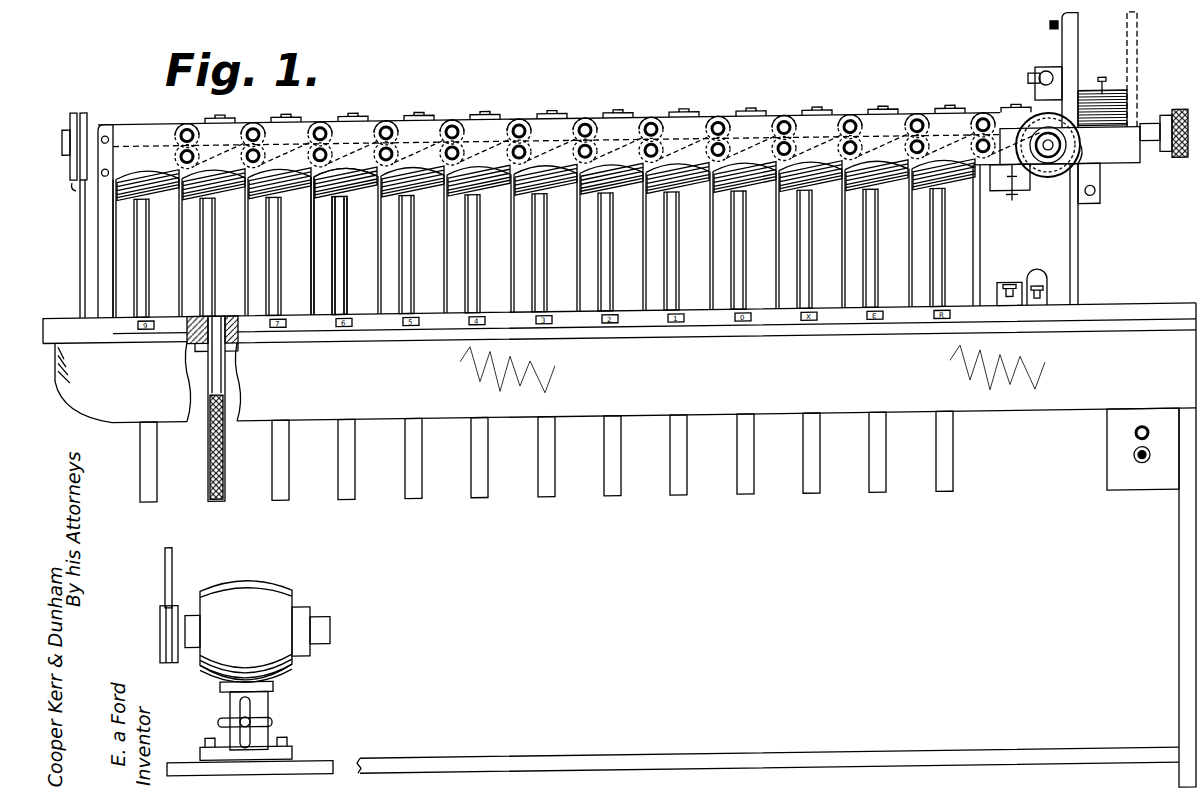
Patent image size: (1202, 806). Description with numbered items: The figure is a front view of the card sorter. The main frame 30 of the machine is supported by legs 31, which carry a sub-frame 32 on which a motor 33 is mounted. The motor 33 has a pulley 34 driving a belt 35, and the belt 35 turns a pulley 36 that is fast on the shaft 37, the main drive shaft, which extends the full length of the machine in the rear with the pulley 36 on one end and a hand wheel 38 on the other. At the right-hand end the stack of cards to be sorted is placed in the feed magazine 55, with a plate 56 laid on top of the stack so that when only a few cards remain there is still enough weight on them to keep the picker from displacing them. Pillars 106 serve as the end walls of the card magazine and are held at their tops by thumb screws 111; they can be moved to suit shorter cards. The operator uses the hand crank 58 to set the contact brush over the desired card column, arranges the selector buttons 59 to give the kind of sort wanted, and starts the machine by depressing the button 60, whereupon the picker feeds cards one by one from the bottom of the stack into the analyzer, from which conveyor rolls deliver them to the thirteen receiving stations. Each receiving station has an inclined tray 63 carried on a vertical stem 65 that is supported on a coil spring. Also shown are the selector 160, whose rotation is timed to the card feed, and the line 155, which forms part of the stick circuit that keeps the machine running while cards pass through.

The main frame 30 is at (619, 404).
The legs 31 is at (1180, 510).
The sub-frame 32 is at (748, 755).
The motor 33 is at (272, 604).
The pulley 34 is at (160, 620).
The belt 35 is at (172, 560).
The pulley 36 is at (72, 180).
The shaft 37 is at (62, 140).
The hand wheel 38 is at (1180, 165).
The feed magazine 55 is at (1112, 114).
The plate 56 is at (1104, 84).
The hand crank 58 is at (1040, 80).
The selector buttons 59 is at (1050, 164).
The button 60 is at (1040, 292).
The inclined tray 63 is at (233, 203).
The vertical stem 65 is at (214, 268).
The pillars 106 is at (1078, 44).
The thumb screws 111 is at (1050, 31).
The line 155 is at (1012, 288).
The selector 160 is at (1074, 168).